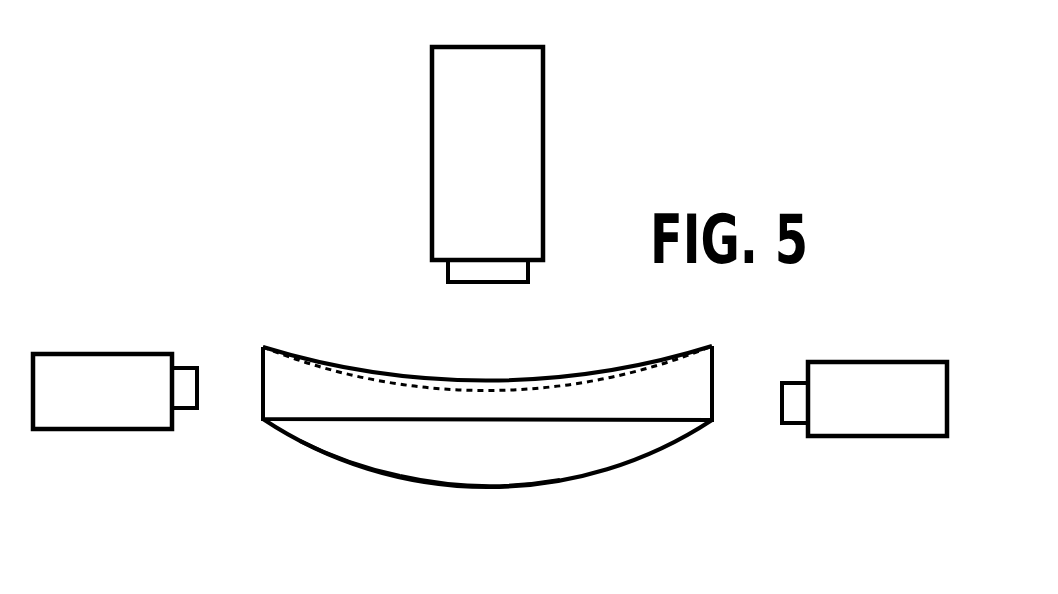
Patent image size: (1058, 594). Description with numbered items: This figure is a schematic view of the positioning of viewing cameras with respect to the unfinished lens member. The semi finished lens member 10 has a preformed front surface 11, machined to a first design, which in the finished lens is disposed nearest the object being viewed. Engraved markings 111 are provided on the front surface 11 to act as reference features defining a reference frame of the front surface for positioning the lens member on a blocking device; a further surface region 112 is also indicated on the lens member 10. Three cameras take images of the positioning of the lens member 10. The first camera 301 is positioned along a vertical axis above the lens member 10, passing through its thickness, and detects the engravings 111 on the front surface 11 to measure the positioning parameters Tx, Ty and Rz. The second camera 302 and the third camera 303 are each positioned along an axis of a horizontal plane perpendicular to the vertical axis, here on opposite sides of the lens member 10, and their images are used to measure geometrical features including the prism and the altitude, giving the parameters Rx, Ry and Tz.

The semi finished lens member 10 is at (532, 449).
The first surface 11 is at (613, 465).
The engraved markings 111 is at (348, 462).
The second surface region 112 is at (453, 483).
The first camera 301 is at (505, 118).
The second camera 302 is at (861, 412).
The third camera 303 is at (102, 392).